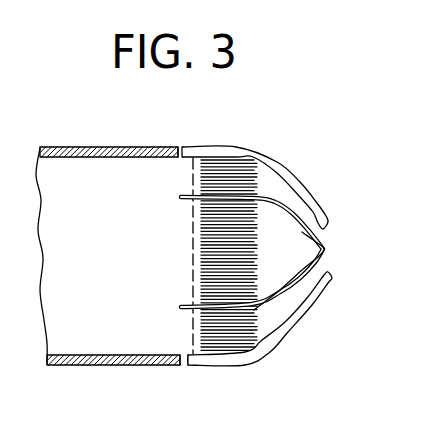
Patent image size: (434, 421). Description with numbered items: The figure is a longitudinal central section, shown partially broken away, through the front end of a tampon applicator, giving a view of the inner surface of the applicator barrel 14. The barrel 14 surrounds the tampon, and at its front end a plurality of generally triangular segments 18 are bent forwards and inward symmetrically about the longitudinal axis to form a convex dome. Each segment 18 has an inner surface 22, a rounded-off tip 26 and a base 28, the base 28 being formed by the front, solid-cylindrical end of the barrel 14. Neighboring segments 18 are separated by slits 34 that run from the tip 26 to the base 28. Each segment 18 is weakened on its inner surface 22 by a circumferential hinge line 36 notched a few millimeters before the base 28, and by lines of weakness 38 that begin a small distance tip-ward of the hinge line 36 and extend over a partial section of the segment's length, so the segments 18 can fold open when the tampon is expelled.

The applicator barrel 14 is at (103, 365).
The segments 18 is at (299, 182).
The inner surface 22 is at (298, 303).
The rounded-off tip 26 is at (331, 248).
The base 28 is at (186, 232).
The slits 34 is at (304, 221).
The hinge line 36 is at (195, 335).
The lines of weakness 38 is at (232, 174).